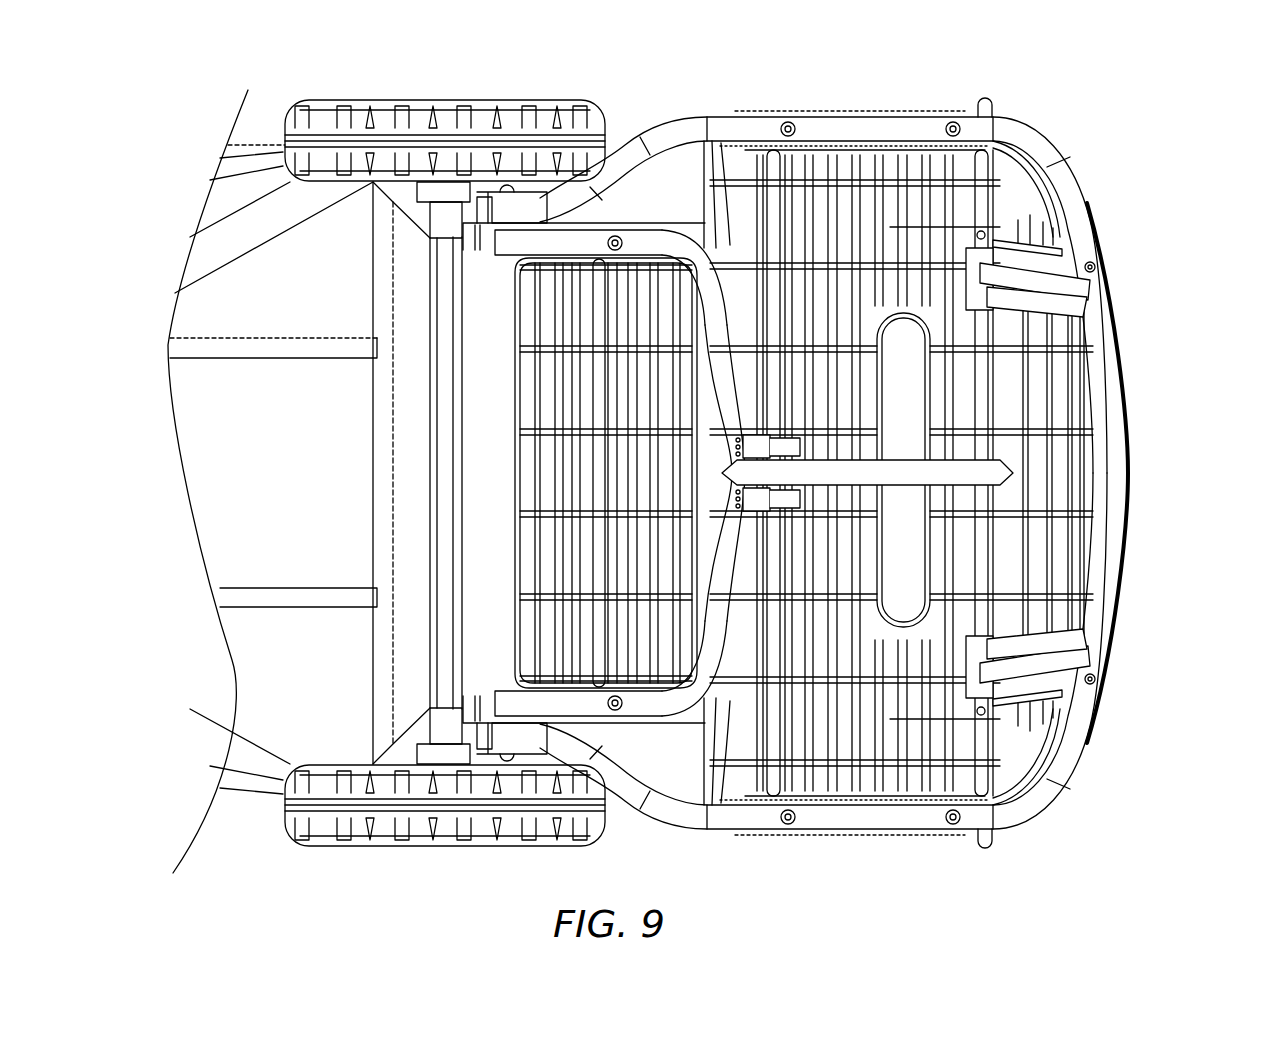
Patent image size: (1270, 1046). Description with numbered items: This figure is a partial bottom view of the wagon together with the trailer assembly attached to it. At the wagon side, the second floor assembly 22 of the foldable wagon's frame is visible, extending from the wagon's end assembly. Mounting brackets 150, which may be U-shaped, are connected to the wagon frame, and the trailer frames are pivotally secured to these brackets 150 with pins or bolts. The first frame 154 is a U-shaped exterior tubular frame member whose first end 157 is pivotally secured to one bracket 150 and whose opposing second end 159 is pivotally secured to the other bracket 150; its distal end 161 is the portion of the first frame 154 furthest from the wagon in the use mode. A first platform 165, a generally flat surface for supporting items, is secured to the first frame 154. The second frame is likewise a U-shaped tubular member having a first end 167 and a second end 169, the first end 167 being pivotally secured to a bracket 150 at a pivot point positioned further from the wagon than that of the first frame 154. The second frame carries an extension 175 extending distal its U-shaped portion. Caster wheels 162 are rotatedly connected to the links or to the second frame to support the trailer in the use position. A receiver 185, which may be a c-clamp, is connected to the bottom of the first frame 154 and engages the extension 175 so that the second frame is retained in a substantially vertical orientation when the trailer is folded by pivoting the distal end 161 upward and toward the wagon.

The second floor assembly 22 is at (383, 507).
The mounting bracket 150 is at (486, 196).
The first frame 154 is at (1035, 132).
The first end 157 is at (568, 743).
The second end 159 is at (571, 203).
The distal end 161 is at (1124, 371).
The wheel 162 is at (1052, 283).
The first platform 165 is at (1083, 550).
The first end 167 is at (510, 690).
The second end 169 is at (537, 245).
The extension 175 is at (1017, 493).
The receiver 185 is at (756, 435).